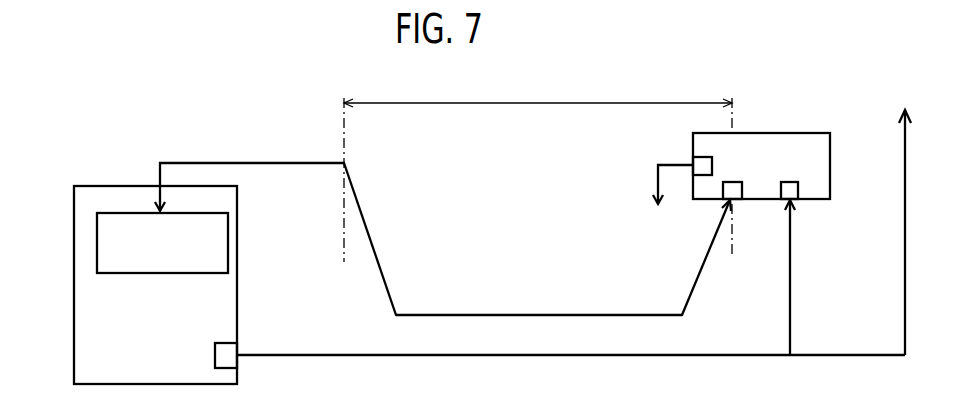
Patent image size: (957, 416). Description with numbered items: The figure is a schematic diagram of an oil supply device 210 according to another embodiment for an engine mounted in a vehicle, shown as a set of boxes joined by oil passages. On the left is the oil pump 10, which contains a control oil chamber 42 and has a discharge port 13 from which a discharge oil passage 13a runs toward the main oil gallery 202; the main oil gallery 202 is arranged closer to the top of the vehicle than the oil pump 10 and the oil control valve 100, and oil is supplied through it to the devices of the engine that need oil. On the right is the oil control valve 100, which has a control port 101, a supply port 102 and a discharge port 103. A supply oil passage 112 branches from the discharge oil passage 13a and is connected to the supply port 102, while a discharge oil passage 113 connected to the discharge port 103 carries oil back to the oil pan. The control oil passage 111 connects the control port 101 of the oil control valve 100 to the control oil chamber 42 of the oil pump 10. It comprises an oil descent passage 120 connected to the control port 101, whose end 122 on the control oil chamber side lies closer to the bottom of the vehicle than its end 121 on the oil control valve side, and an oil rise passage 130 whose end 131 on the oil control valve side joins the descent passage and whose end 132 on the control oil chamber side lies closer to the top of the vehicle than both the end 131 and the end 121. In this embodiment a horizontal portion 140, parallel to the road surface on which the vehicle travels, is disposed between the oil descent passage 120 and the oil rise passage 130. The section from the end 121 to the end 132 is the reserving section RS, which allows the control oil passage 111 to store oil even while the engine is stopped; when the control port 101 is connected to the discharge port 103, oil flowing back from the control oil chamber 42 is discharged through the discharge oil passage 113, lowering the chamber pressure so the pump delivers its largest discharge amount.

The oil supply device 210 is at (200, 118).
The oil pump 10 is at (74, 300).
The control oil chamber 42 is at (97, 236).
The discharge port 13 is at (215, 354).
The discharge oil passage 13a is at (437, 357).
The main oil gallery 202 is at (903, 214).
The supply oil passage 112 is at (790, 278).
The control oil passage 111 is at (278, 132).
The reserving section RS is at (530, 106).
The end of oil rise passage on control oil chamber side 132 is at (350, 163).
The oil rise passage 130 is at (443, 243).
The end of oil rise passage on oil control valve side 131 is at (400, 311).
The horizontal portion 140 is at (522, 313).
The end of oil descent passage on control oil chamber side 122 is at (683, 310).
The oil descent passage 120 is at (705, 258).
The end of oil descent passage on oil control valve side 121 is at (722, 207).
The oil control valve 100 is at (770, 133).
The discharge port 103 is at (693, 162).
The discharge oil passage 113 is at (657, 176).
The control port 101 is at (736, 204).
The supply port 102 is at (800, 190).